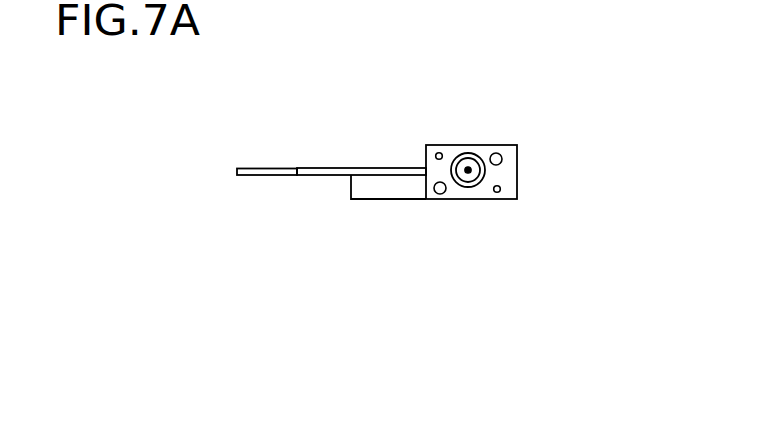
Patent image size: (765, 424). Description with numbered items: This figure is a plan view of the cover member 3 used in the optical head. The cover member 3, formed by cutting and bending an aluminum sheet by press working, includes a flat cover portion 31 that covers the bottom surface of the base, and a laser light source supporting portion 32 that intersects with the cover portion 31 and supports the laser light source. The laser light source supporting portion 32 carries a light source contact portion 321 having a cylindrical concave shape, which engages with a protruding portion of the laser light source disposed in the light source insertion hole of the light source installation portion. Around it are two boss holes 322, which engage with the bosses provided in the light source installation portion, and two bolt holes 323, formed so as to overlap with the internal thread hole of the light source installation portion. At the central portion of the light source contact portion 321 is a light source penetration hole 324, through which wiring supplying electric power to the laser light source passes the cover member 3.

The cover member 3 is at (337, 172).
The cover portion 31 is at (265, 172).
The laser light source supporting portion 32 is at (512, 155).
The light source contact portion 321 is at (468, 172).
The boss holes 322 is at (436, 153).
The bolt holes 323 is at (497, 161).
The light source penetration hole 324 is at (468, 170).